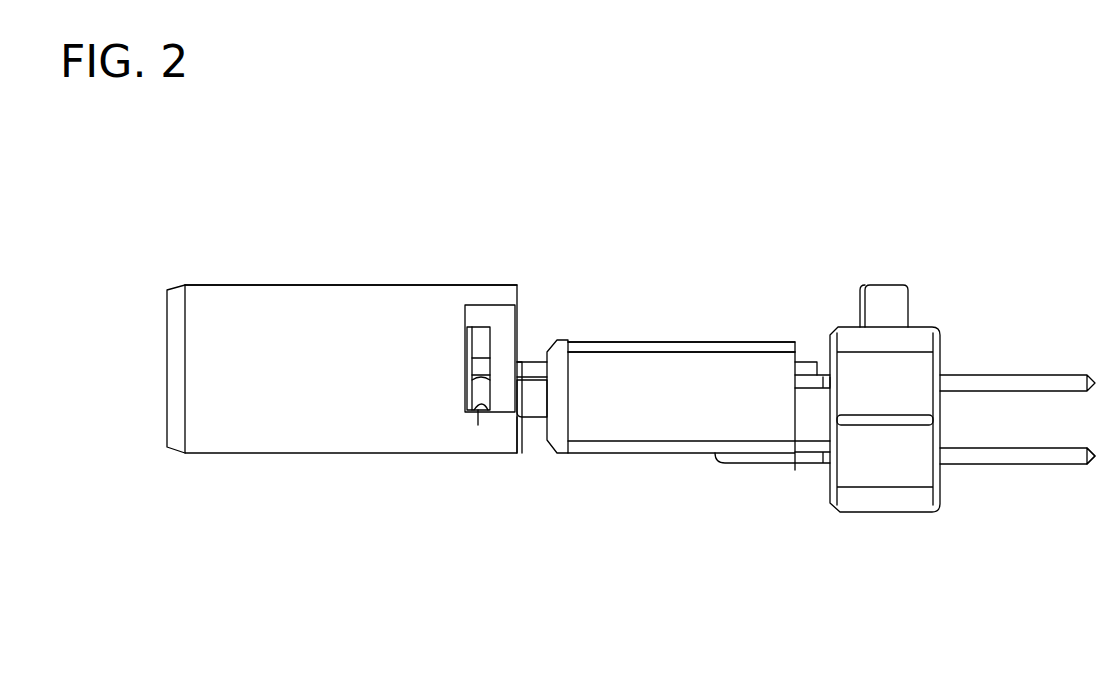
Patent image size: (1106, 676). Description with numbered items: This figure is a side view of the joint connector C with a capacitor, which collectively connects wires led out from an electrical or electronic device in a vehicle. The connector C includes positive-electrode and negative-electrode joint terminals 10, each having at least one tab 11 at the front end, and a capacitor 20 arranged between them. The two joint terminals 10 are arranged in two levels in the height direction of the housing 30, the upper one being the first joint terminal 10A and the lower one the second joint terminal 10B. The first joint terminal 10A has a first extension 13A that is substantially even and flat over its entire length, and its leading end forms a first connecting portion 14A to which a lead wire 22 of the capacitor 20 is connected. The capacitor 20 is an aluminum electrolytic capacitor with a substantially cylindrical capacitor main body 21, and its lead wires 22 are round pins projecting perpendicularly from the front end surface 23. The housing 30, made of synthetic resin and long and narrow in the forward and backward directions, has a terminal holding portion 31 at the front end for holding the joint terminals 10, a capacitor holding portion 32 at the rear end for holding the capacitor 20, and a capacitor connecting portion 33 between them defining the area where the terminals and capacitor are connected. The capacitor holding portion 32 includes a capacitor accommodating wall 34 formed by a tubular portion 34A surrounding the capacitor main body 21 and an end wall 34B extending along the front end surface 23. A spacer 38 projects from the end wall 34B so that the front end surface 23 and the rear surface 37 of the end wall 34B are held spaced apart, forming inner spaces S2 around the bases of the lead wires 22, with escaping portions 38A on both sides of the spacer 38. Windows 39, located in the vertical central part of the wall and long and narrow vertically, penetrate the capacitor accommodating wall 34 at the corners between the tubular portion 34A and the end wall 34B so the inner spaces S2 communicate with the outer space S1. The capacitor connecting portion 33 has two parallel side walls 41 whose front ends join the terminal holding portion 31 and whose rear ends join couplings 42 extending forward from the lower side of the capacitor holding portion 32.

The joint connector C is at (628, 136).
The joint terminals 10 is at (1017, 321).
The first joint terminal 10A is at (1008, 380).
The second joint terminal 10B is at (1043, 457).
The tab 11 is at (1075, 458).
The first extension 13A is at (800, 384).
The first connecting portion 14A is at (800, 384).
The capacitor 20 is at (466, 337).
The capacitor main body 21 is at (470, 388).
The lead wire 22 is at (806, 360).
The front end surface 23 is at (479, 403).
The housing 30 is at (668, 355).
The terminal holding portion 31 is at (902, 465).
The capacitor holding portion 32 is at (233, 420).
The capacitor connecting portion 33 is at (596, 412).
The capacitor accommodating wall 34 is at (237, 315).
The tubular portion 34A is at (297, 315).
The end wall 34B is at (505, 368).
The rear surface 37 is at (486, 400).
The spacer 38 is at (478, 348).
The escaping portions 38A is at (477, 360).
The windows 39 is at (486, 365).
The side walls 41 is at (716, 370).
The couplings 42 is at (535, 432).
The outer space S1 is at (533, 340).
The inner spaces S2 is at (484, 333).